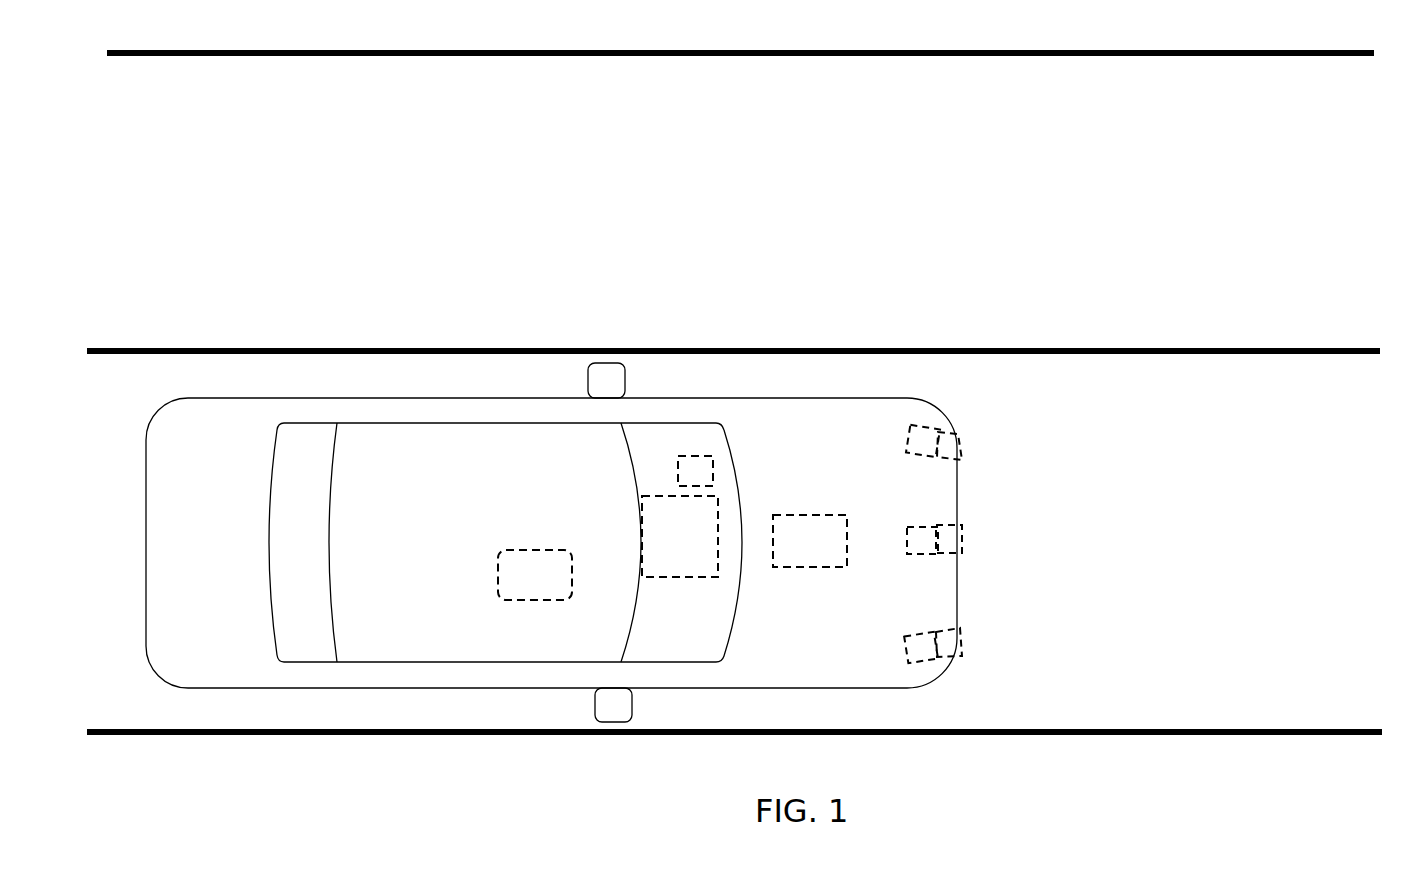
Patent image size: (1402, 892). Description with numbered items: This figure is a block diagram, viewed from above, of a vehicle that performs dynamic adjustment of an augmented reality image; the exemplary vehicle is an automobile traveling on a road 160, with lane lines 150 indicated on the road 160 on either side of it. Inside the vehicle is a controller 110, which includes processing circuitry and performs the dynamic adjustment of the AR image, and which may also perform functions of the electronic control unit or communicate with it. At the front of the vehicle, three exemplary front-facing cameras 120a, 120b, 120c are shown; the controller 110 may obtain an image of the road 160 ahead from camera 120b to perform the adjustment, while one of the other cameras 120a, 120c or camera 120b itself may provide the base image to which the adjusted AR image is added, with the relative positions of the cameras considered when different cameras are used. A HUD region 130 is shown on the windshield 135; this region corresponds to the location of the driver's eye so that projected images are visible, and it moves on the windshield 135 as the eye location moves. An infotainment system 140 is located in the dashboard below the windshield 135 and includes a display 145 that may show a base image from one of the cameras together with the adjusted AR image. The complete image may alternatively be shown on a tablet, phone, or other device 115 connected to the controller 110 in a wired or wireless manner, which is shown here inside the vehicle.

The controller 110 is at (810, 541).
The device 115 is at (535, 575).
The front-facing camera 120a is at (932, 428).
The front-facing camera 120b is at (922, 554).
The front-facing camera 120c is at (912, 661).
The HUD region 130 is at (690, 455).
The windshield 135 is at (658, 440).
The infotainment system 140 is at (680, 536).
The display 145 is at (679, 556).
The lane lines 150 is at (1152, 732).
The road 160 is at (1336, 443).